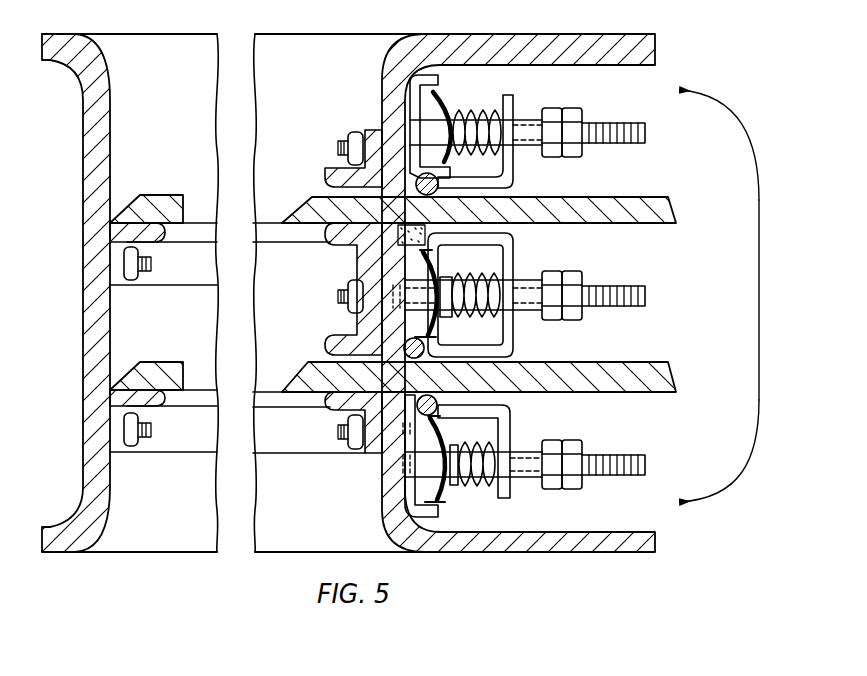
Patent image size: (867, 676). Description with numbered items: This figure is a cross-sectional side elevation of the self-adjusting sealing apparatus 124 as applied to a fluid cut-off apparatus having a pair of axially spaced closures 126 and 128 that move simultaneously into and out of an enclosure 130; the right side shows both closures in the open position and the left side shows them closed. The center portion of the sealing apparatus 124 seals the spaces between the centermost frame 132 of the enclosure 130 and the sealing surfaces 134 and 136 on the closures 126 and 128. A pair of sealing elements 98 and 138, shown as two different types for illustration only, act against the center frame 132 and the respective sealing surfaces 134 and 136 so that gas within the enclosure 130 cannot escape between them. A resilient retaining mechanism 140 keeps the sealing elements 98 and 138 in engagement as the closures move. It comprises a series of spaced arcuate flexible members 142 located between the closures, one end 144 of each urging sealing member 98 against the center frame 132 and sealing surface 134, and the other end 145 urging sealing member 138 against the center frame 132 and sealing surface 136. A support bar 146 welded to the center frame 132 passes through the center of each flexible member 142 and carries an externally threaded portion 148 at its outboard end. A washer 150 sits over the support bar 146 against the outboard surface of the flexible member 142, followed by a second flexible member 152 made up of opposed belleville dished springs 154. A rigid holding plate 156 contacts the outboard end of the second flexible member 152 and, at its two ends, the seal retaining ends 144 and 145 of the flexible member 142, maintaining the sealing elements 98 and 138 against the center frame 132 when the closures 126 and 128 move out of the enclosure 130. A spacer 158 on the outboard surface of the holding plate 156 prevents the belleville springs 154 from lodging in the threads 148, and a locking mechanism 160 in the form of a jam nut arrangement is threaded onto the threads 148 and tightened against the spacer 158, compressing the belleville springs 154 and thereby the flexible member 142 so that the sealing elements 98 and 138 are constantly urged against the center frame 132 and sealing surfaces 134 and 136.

The sealing element 98 is at (362, 258).
The self-adjusting sealing apparatus 124 is at (668, 301).
The closure 126 is at (678, 198).
The closure 128 is at (669, 393).
The enclosure 130 is at (182, 98).
The center frame 132 is at (390, 327).
The sealing surface 134 is at (293, 252).
The sealing surface 136 is at (340, 395).
The sealing element 138 is at (338, 408).
The resilient retaining mechanism 140 is at (552, 300).
The flexible member 142 is at (338, 290).
The end of flexible member 144 is at (432, 262).
The end of flexible member 145 is at (452, 330).
The support bar 146 is at (649, 297).
The externally threaded portion 148 is at (645, 285).
The washer 150 is at (465, 262).
The second flexible member 152 is at (474, 268).
The belleville dished springs 154 is at (470, 330).
The rigid holding plate 156 is at (518, 258).
The spacer 158 is at (525, 322).
The locking mechanism 160 is at (580, 328).